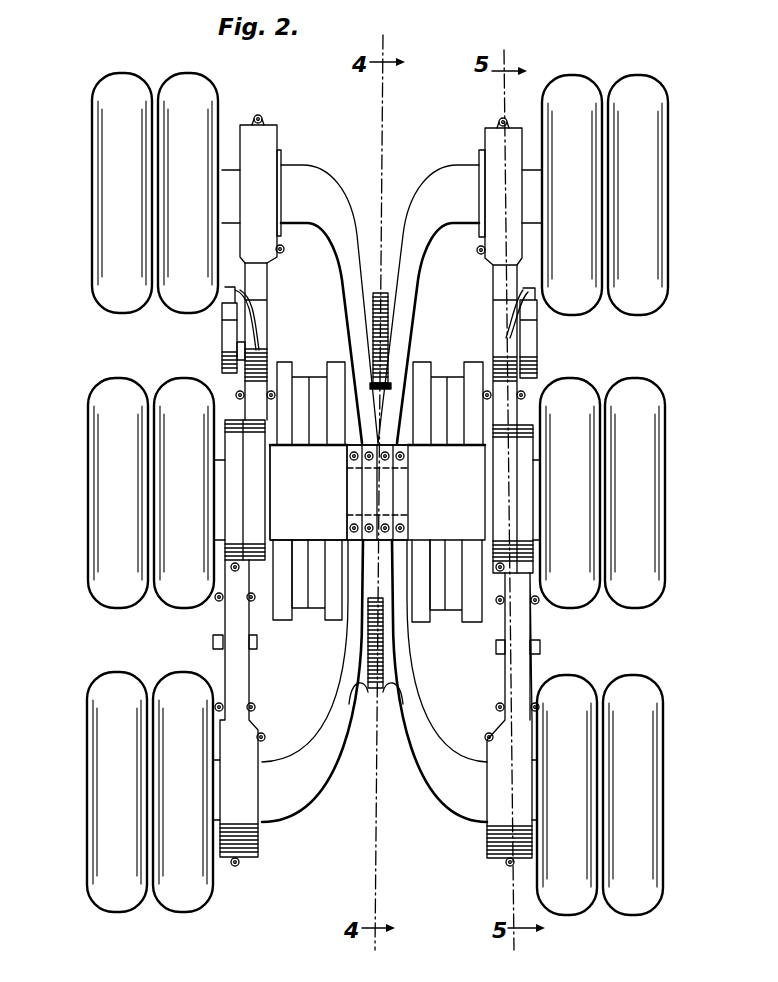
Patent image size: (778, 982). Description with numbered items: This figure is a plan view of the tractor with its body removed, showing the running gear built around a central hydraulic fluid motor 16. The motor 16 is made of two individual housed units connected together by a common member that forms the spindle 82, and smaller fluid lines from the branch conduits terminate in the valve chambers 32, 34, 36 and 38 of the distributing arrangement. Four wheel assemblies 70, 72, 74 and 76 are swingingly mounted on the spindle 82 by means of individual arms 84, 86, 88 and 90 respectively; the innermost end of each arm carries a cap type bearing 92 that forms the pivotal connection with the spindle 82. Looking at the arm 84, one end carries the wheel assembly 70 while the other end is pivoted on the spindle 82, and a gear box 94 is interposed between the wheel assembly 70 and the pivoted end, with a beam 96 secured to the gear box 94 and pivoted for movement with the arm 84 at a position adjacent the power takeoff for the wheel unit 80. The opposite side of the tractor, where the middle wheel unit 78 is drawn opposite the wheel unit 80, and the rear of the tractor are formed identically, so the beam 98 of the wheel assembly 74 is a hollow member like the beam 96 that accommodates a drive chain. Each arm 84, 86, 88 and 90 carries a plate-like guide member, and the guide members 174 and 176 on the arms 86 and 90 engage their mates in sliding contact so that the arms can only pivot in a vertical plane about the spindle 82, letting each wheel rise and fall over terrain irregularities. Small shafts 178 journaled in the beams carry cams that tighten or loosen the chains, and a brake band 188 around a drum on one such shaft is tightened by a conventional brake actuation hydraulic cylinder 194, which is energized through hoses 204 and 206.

The hydraulic fluid motor 16 is at (290, 531).
The valve chamber 32 is at (348, 450).
The valve chamber 34 is at (287, 379).
The valve chamber 36 is at (330, 621).
The valve chamber 38 is at (280, 621).
The wheel assembly 70 is at (86, 225).
The wheel assembly 72 is at (670, 167).
The wheel assembly 74 is at (82, 850).
The wheel assembly 76 is at (668, 832).
The middle right wheel pair 78 is at (666, 486).
The wheel unit 80 is at (86, 466).
The spindle 82 is at (386, 500).
The arm 84 is at (305, 179).
The arm 86 is at (446, 179).
The arm 88 is at (312, 790).
The arm 90 is at (448, 821).
The cap type bearing 92 is at (403, 490).
The gear box 94 is at (272, 143).
The beam 96 is at (268, 281).
The beam 98 is at (248, 681).
The guide member 174 is at (390, 336).
The guide member 176 is at (385, 645).
The small shaft 178 is at (213, 641).
The brake band 188 is at (232, 327).
The hydraulic cylinder 194 is at (532, 297).
The hose 204 is at (252, 347).
The hose 206 is at (240, 353).